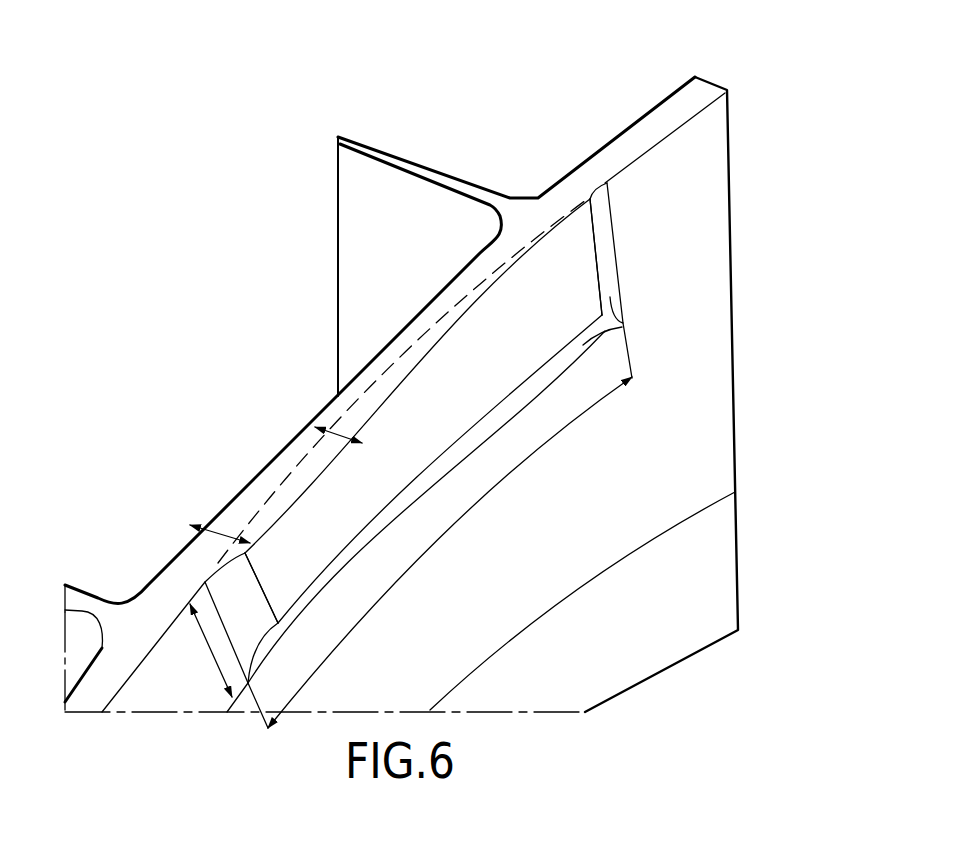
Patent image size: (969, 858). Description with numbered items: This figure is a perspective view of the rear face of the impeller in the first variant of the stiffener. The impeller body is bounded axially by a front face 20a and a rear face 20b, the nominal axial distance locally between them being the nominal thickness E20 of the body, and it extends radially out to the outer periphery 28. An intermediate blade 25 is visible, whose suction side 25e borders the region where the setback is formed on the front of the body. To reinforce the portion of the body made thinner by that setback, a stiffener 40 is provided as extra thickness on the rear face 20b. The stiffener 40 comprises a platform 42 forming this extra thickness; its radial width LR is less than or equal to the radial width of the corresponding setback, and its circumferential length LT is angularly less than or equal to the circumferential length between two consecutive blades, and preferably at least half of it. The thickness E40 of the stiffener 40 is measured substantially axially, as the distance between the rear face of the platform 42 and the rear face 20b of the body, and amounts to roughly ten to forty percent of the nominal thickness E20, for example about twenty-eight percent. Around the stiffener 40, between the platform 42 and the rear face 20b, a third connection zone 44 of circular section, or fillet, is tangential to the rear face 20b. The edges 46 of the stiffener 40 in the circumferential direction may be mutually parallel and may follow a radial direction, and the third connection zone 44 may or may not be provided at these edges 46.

The front face 20a is at (136, 572).
The rear face 20b is at (688, 428).
The intermediate blade 25 is at (347, 202).
The suction side 25e is at (382, 280).
The outer periphery 28 is at (681, 100).
The stiffener 40 is at (632, 247).
The platform 42 is at (410, 415).
The third connection zone 44 is at (623, 318).
The edges 46 is at (263, 586).
The thickness of the stiffener E40 is at (342, 432).
The nominal thickness of the body E20 is at (225, 532).
The radial width LR is at (202, 650).
The circumferential length LT is at (450, 552).